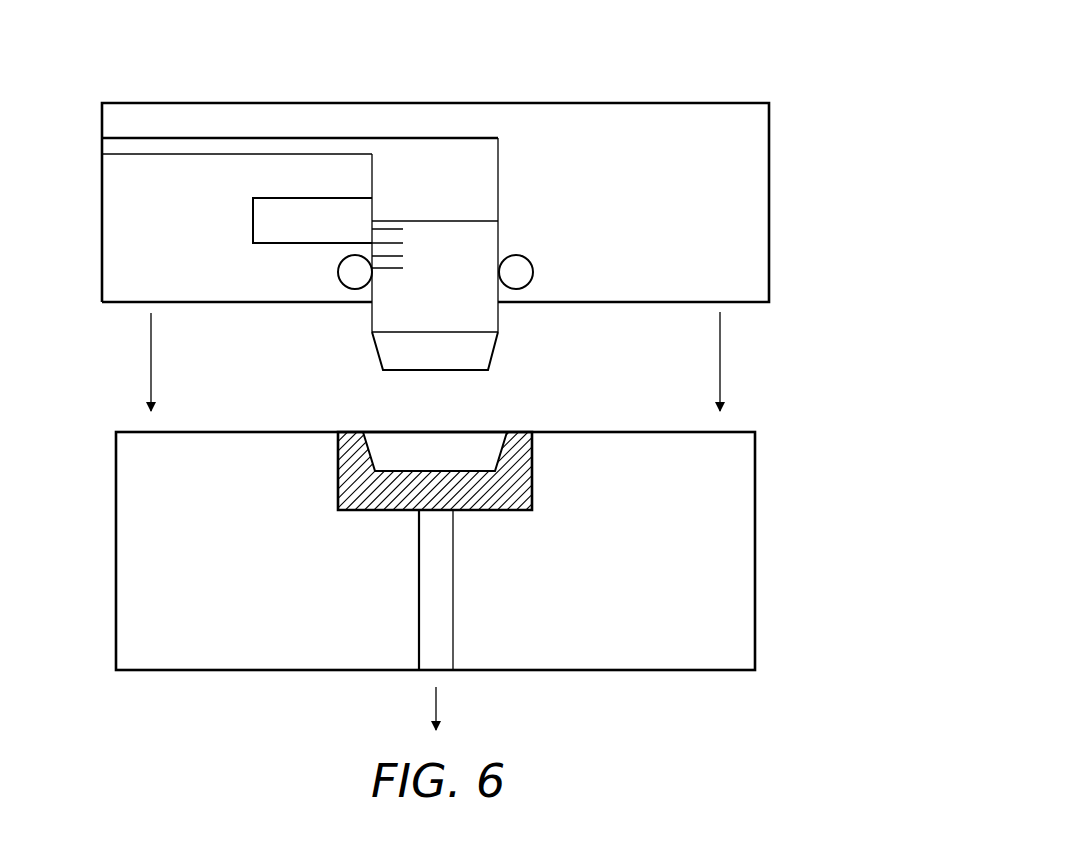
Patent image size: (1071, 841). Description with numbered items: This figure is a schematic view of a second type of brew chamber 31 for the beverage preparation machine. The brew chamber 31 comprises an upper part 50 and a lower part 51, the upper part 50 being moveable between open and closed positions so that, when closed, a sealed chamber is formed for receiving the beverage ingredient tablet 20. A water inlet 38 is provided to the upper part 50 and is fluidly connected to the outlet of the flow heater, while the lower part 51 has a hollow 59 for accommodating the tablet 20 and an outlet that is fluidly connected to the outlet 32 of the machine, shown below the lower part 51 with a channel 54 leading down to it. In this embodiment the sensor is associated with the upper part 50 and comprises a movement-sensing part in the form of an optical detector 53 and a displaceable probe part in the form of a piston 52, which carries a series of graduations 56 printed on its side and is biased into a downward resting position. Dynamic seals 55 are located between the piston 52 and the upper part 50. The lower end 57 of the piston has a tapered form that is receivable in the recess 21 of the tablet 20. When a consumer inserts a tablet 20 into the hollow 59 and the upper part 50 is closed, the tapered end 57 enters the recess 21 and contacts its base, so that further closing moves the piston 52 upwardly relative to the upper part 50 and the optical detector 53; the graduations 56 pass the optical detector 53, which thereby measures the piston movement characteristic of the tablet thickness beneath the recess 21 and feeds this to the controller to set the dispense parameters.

The brew chamber 31 is at (705, 61).
The upper part 50 is at (762, 118).
The water inlet 38 is at (91, 146).
The displaceable probe part 52 is at (492, 321).
The lower end of the piston 57 is at (484, 357).
The optical detector 53 is at (253, 212).
The graduations 56 is at (392, 270).
The dynamic seals 55 is at (524, 272).
The lower part 51 is at (747, 445).
The hollow 59 is at (534, 509).
The recess 21 is at (434, 440).
The beverage ingredient tablet 20 is at (376, 507).
The outlet channel 54 is at (425, 612).
The outlet 32 is at (434, 708).